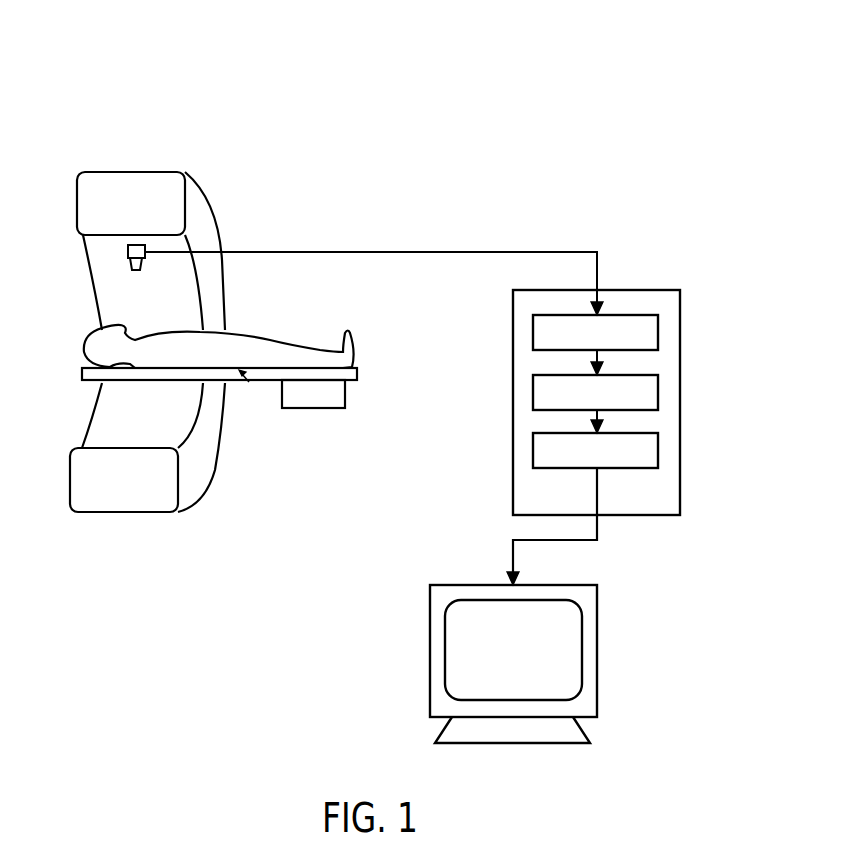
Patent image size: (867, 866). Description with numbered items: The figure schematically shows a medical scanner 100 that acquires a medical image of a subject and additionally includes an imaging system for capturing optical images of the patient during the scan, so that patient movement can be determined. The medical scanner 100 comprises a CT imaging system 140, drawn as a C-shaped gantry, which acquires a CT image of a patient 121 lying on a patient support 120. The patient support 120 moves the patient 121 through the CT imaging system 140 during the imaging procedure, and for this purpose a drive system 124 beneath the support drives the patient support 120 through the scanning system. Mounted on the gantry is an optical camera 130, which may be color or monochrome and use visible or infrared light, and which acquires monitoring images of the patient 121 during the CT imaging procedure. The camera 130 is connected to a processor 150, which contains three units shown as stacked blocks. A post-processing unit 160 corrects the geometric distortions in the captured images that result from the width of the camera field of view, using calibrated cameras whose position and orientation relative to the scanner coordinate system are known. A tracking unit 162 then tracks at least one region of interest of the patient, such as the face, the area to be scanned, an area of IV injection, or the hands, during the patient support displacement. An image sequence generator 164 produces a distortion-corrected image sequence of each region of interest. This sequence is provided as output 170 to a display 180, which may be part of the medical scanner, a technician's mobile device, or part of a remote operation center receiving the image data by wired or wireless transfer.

The medical scanner 100 is at (522, 98).
The CT imaging system 140 is at (208, 200).
The optical camera 130 is at (145, 254).
The patient 121 is at (358, 340).
The patient support 120 is at (358, 373).
The drive system 124 is at (316, 406).
The processor 150 is at (513, 470).
The post-processing unit 160 is at (658, 334).
The tracking unit 162 is at (658, 396).
The image sequence generator 164 is at (658, 455).
The output 170 is at (557, 537).
The display 180 is at (430, 652).